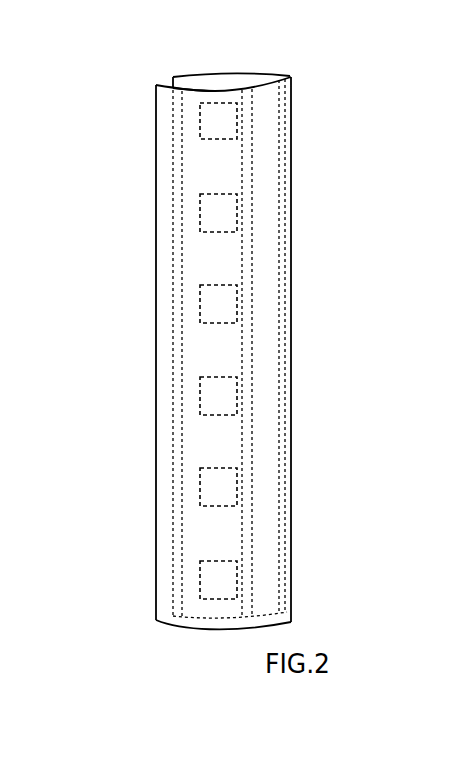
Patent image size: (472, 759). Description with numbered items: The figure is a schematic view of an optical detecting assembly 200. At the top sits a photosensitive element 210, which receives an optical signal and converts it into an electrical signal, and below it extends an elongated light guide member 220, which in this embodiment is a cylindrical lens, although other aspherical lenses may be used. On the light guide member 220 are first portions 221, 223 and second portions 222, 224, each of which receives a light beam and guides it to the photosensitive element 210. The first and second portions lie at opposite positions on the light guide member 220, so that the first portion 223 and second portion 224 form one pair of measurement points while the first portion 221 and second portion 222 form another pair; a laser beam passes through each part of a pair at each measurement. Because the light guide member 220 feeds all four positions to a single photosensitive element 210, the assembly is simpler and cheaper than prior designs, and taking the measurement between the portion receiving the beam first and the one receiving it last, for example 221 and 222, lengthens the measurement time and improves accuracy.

The optical detecting assembly 200 is at (332, 230).
The photosensitive element 210 is at (236, 75).
The light guide member 220 is at (267, 395).
The first portion 221 is at (159, 352).
The second portion 222 is at (287, 339).
The first portion 223 is at (230, 438).
The second portion 224 is at (263, 440).